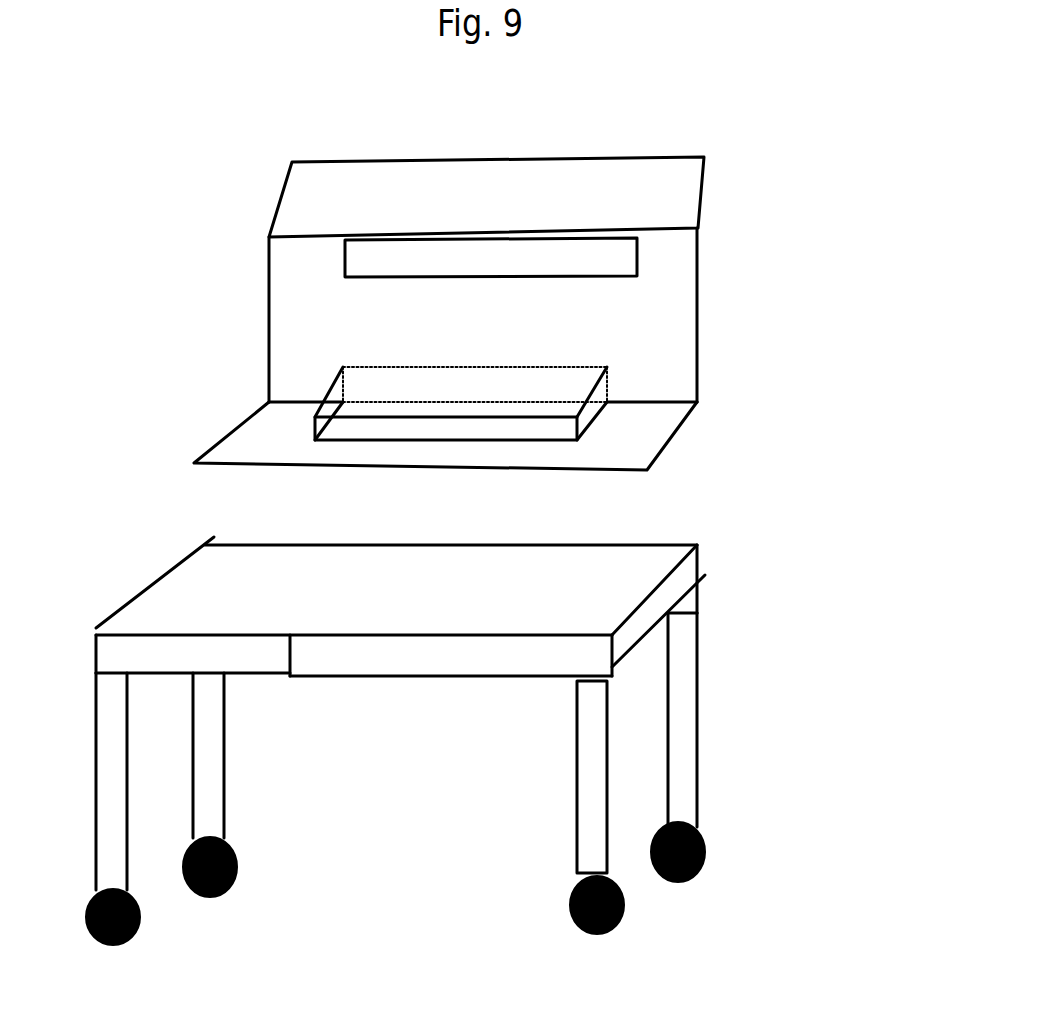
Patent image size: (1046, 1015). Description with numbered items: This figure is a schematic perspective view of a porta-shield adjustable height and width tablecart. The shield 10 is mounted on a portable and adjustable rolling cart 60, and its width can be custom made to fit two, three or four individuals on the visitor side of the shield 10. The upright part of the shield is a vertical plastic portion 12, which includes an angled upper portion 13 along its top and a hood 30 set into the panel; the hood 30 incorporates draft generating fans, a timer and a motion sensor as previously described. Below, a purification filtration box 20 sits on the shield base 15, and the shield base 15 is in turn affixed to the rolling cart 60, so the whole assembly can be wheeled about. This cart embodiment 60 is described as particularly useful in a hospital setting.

The shield 10 is at (476, 268).
The vertical plastic portion 12 is at (287, 302).
The angled upper portion 13 is at (648, 178).
The shield base 15 is at (635, 440).
The purification filtration box 20 is at (300, 365).
The hood 30 is at (477, 280).
The rolling cart 60 is at (603, 590).